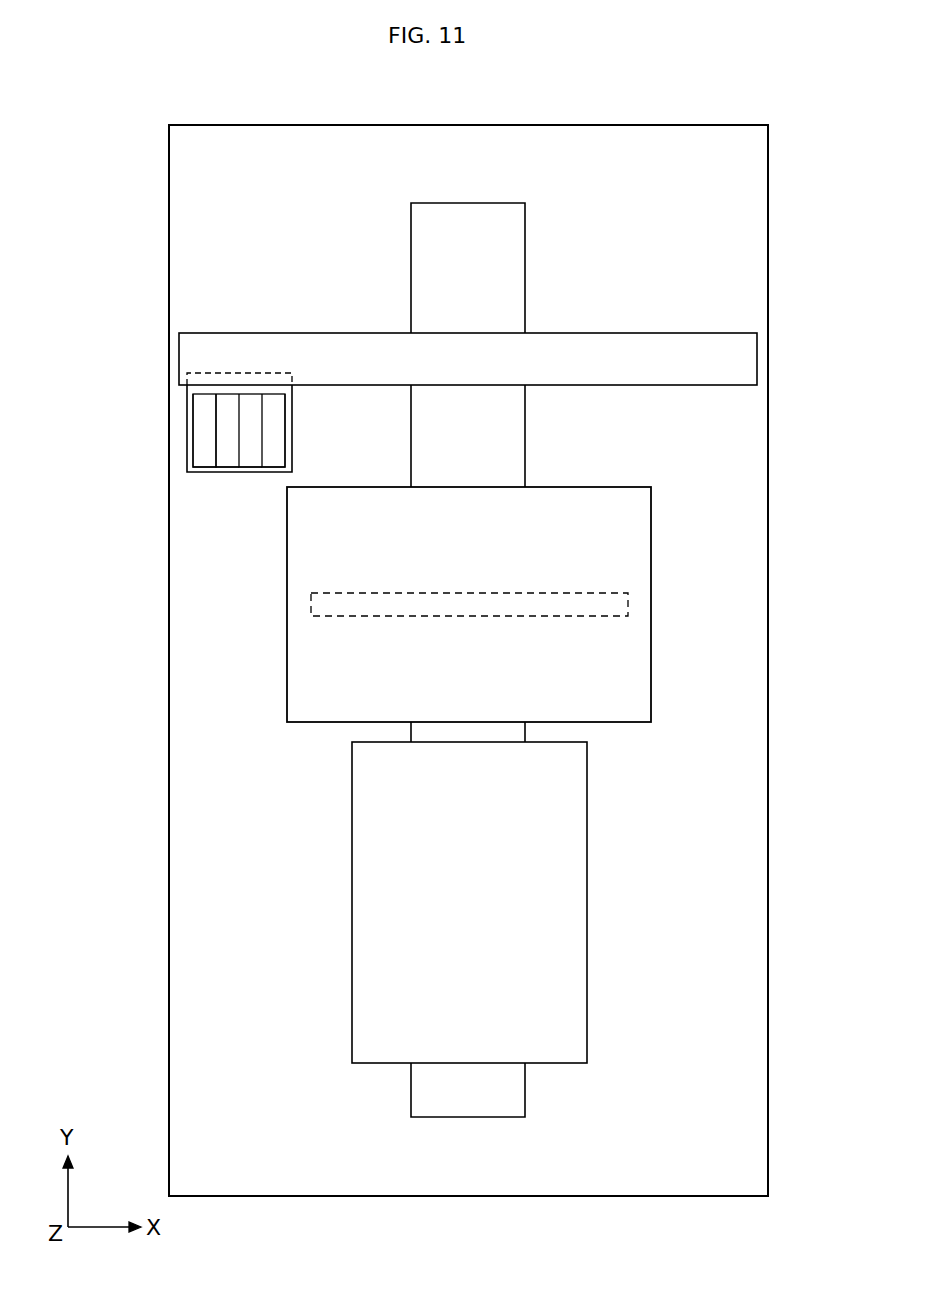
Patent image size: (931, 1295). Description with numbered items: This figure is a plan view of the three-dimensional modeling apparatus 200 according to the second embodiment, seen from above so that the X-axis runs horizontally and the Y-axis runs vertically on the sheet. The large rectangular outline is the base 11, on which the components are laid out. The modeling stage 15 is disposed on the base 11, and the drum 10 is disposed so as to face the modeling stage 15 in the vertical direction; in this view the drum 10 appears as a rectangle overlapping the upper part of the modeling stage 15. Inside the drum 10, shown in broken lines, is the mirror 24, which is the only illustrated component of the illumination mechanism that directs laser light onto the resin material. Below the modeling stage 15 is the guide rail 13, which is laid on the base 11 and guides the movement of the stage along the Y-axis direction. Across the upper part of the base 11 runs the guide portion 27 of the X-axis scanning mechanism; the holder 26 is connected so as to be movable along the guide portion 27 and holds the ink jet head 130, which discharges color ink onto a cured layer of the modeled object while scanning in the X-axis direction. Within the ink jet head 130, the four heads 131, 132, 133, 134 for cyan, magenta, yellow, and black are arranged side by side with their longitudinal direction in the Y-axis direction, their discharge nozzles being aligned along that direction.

The 3D modeling apparatus 200 is at (287, 88).
The base 11 is at (752, 258).
The guide portion 27 is at (198, 348).
The holder 26 is at (190, 420).
The ink jet head 130 is at (166, 498).
The head 131 is at (205, 467).
The head 132 is at (228, 467).
The head 133 is at (251, 467).
The head 134 is at (273, 467).
The drum 10 is at (635, 680).
The mirror 24 is at (628, 596).
The modeling stage 15 is at (562, 958).
The guide rail 13 is at (513, 1092).